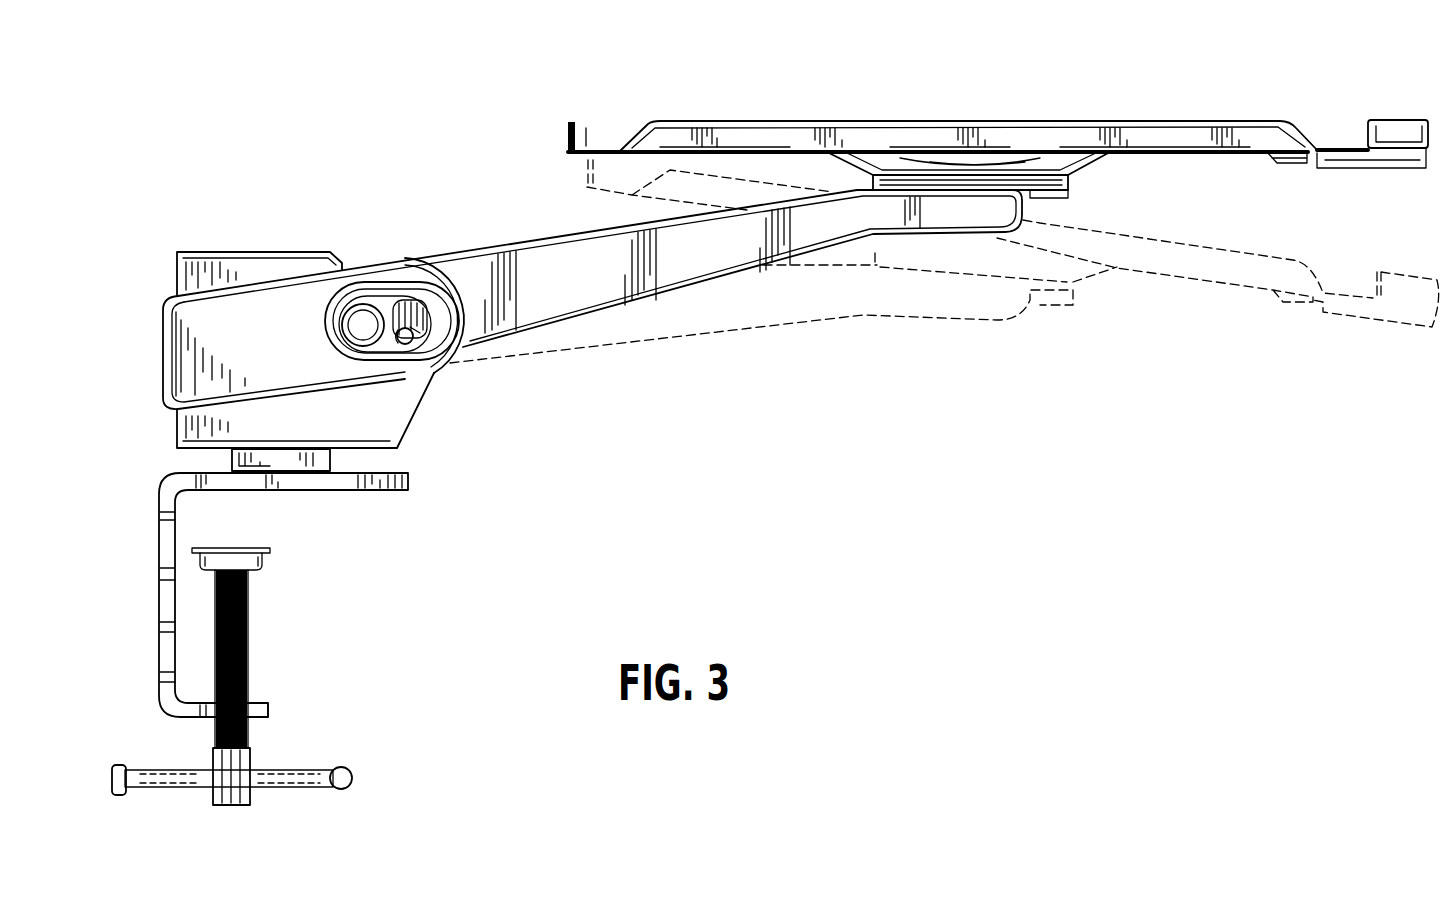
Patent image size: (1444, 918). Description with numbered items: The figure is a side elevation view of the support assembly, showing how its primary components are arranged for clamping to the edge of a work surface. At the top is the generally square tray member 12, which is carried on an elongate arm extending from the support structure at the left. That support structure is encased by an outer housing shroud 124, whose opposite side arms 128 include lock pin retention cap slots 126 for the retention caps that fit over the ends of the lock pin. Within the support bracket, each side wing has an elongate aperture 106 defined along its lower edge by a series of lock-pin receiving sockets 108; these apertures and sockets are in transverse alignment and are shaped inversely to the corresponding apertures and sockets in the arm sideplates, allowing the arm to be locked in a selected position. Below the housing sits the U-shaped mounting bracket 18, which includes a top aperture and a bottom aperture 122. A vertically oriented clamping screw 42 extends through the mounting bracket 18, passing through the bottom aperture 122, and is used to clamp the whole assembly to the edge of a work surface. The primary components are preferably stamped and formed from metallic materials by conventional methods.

The tray member 12 is at (1053, 120).
The U-shaped mounting bracket 18 is at (158, 577).
The clamping screw 42 is at (255, 619).
The elongate aperture 106 is at (399, 342).
The lock-pin receiving sockets 108 is at (413, 338).
The bottom aperture 122 is at (212, 718).
The outer housing shroud 124 is at (160, 357).
The lock pin retention cap slots 126 is at (416, 293).
The side arms 128 is at (280, 294).